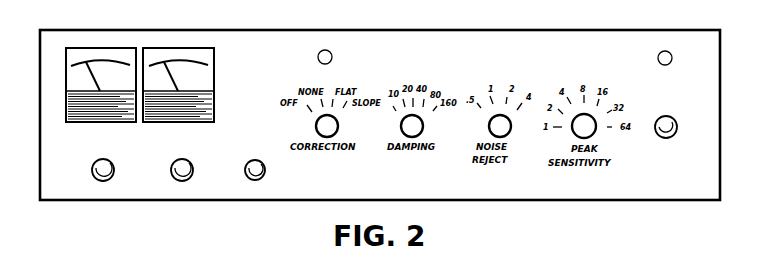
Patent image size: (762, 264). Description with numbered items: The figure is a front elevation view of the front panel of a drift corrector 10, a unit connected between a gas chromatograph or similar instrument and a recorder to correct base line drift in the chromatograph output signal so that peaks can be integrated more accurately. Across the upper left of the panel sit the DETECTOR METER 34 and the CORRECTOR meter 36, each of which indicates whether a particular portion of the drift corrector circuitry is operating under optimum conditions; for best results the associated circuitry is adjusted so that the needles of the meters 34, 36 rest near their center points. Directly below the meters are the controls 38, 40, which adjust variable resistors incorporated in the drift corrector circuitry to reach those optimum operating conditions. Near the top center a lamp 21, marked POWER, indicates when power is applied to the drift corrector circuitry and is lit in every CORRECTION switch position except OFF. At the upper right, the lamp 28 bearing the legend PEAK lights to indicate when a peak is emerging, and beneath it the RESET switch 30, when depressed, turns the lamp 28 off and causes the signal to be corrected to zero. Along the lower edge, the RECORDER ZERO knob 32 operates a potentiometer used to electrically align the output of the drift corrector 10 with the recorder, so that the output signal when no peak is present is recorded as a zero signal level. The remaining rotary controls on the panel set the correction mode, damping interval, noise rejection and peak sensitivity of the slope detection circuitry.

The drift corrector 10 is at (533, 30).
The DETECTOR METER 34 is at (90, 48).
The CORRECTOR meter 36 is at (152, 48).
The lamp 21 is at (332, 57).
The lamp 28 is at (672, 58).
The RESET switch 30 is at (673, 137).
The control 38 is at (114, 170).
The control 40 is at (193, 170).
The RECORDER ZERO knob 32 is at (265, 170).